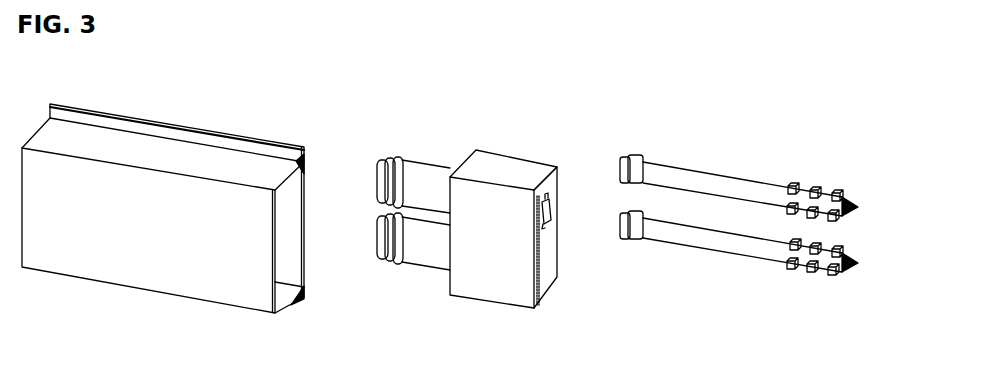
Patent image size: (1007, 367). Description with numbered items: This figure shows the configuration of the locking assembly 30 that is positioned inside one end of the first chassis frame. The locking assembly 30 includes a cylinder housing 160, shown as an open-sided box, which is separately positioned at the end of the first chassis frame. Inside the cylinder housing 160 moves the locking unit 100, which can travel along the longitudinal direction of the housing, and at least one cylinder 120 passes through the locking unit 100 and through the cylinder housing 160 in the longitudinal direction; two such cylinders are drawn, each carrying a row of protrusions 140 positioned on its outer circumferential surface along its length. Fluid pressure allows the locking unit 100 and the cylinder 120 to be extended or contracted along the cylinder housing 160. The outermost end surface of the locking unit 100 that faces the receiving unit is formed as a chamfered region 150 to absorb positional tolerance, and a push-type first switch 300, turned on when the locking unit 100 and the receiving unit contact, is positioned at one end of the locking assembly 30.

The locking assembly 30 is at (318, 75).
The cylinder housing 160 is at (233, 158).
The first switch 300 is at (303, 162).
The locking unit 100 is at (492, 163).
The chamfered region 150 is at (552, 168).
The cylinder 120 is at (687, 173).
The protrusion 140 is at (836, 189).